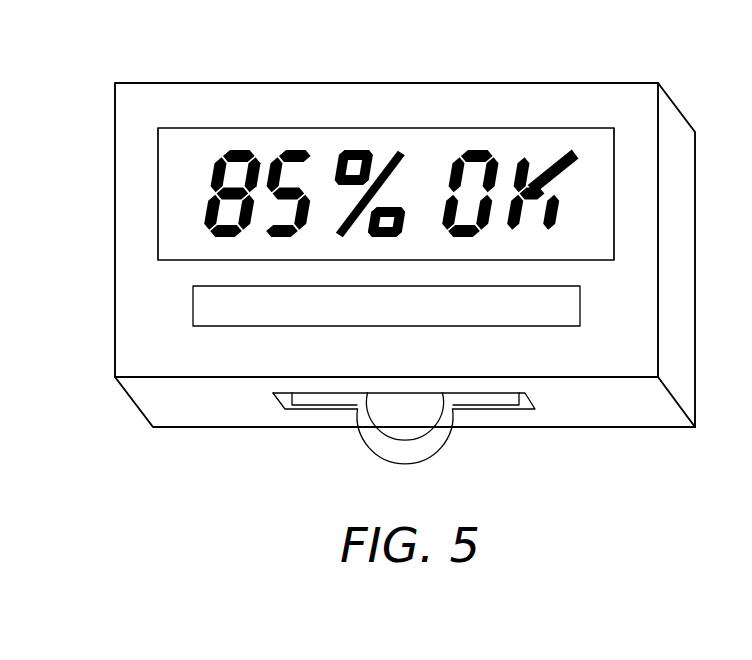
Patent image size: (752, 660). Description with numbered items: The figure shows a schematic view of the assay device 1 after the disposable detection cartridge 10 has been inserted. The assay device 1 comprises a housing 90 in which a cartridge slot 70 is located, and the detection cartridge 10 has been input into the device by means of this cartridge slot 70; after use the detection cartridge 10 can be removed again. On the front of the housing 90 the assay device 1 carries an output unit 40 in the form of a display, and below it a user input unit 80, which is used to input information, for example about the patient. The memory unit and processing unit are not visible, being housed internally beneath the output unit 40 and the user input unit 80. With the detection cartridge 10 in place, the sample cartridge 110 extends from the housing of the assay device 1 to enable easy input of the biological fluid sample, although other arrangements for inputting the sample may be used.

The assay device 1 is at (374, 216).
The detection cartridge 10 is at (503, 410).
The output unit 40 is at (590, 128).
The cartridge slot 70 is at (277, 400).
The user input unit 80 is at (581, 304).
The housing 90 is at (115, 323).
The sample cartridge 110 is at (405, 430).